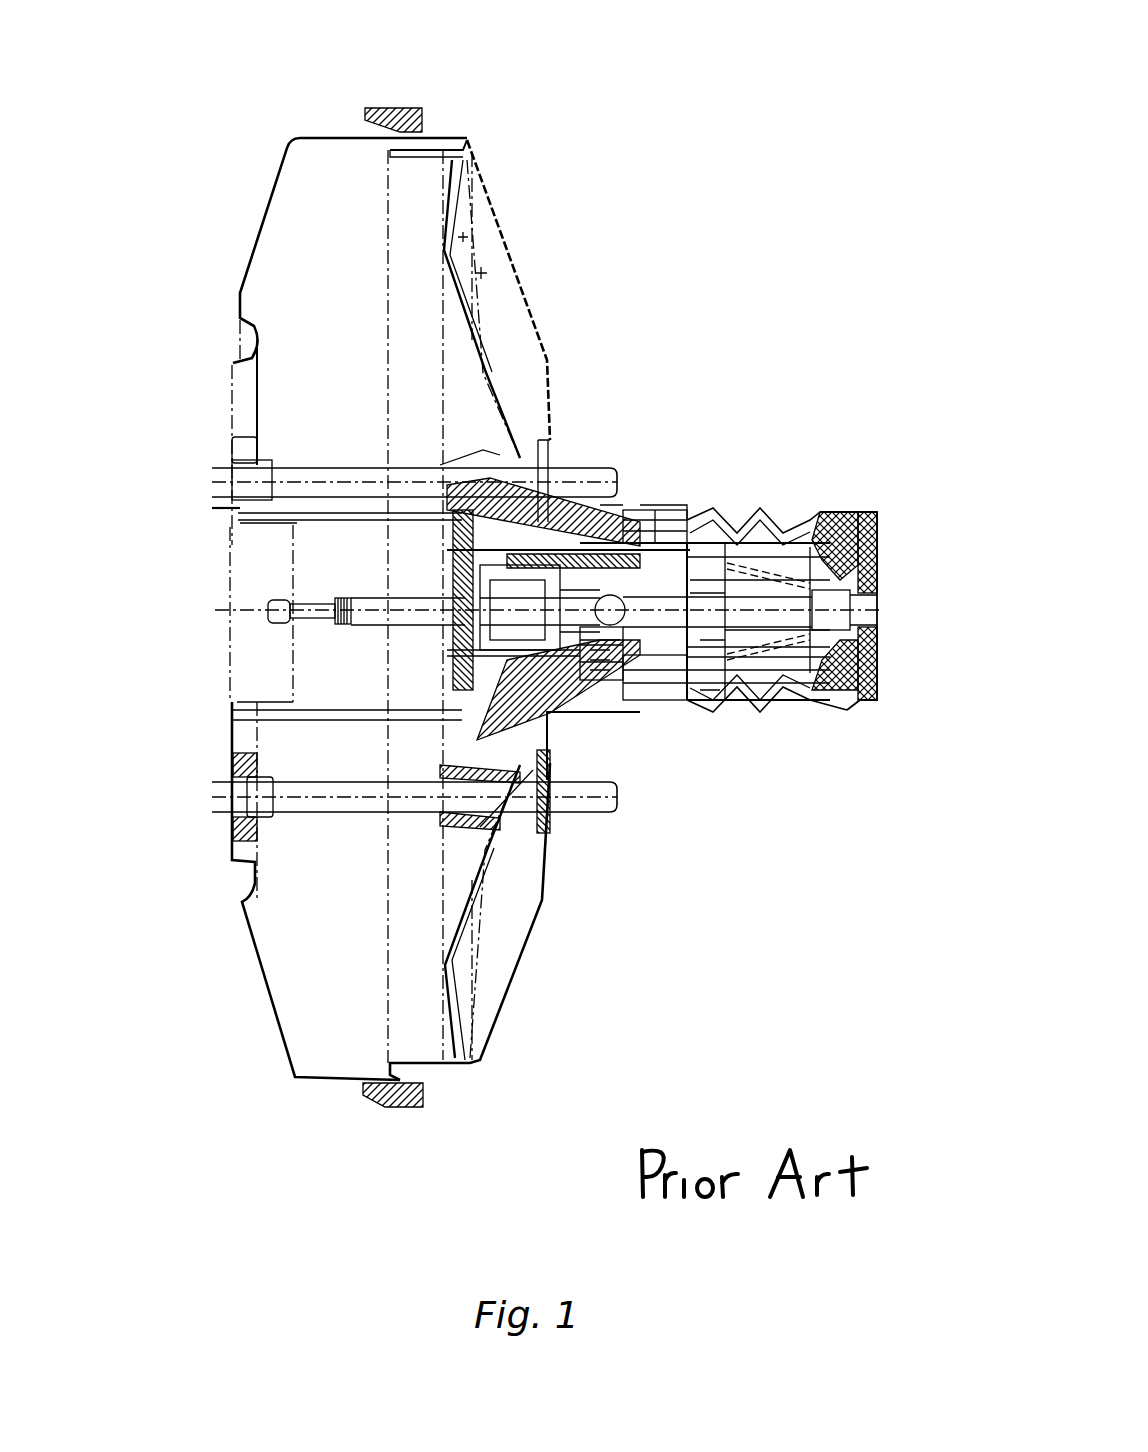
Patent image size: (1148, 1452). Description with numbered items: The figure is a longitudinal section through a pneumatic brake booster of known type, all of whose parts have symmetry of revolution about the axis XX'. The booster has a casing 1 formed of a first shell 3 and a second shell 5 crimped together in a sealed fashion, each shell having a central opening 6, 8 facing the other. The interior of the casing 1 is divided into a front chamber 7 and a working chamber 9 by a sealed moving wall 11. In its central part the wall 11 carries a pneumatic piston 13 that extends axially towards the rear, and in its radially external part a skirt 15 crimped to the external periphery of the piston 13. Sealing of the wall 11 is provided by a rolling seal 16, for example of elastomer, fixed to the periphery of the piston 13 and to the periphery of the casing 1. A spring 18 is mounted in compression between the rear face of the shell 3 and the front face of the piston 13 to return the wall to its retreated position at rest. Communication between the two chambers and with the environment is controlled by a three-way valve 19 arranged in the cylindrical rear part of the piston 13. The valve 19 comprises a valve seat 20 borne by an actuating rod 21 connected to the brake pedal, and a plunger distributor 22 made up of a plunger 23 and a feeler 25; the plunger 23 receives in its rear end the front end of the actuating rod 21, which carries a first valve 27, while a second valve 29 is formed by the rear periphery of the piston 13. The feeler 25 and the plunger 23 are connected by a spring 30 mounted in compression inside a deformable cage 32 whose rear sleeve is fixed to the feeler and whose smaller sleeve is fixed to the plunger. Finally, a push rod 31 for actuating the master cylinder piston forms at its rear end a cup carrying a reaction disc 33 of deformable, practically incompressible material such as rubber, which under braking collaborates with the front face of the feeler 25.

The casing 1 is at (318, 97).
The first shell 3 is at (245, 286).
The second shell 5 is at (512, 250).
The central opening 6 is at (245, 514).
The front chamber 7 is at (297, 197).
The central opening 8 is at (688, 522).
The working chamber 9 is at (488, 201).
The sealed moving wall 11 is at (505, 397).
The pneumatic piston 13 is at (545, 724).
The skirt 15 is at (467, 1040).
The rolling seal 16 is at (462, 146).
The spring 18 is at (248, 732).
The three-way valve 19 is at (728, 509).
The valve seat 20 is at (697, 705).
The actuating rod 21 is at (845, 557).
The plunger distributor 22 is at (630, 703).
The plunger 23 is at (640, 517).
The feeler 25 is at (520, 535).
The first valve 27 is at (683, 702).
The second valve 29 is at (662, 527).
The spring 30 is at (573, 709).
The push rod 31 is at (303, 635).
The deformable cage 32 is at (565, 547).
The reaction disc 33 is at (545, 817).